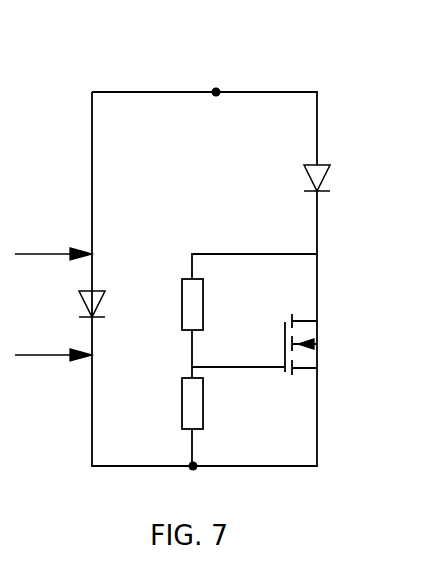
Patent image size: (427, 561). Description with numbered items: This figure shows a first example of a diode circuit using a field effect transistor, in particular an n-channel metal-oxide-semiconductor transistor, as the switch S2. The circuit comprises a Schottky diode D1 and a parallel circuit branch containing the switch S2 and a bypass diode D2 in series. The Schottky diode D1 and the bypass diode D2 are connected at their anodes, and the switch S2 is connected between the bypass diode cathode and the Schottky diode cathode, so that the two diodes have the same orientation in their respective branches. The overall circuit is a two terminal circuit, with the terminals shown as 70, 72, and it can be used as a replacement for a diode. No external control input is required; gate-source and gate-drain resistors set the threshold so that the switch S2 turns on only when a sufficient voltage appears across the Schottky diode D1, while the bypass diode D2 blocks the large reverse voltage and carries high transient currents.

The terminal 70 is at (216, 92).
The terminal 72 is at (193, 465).
The Schottky diode D1 is at (75, 304).
The bypass diode D2 is at (301, 178).
The switch S2 is at (294, 331).